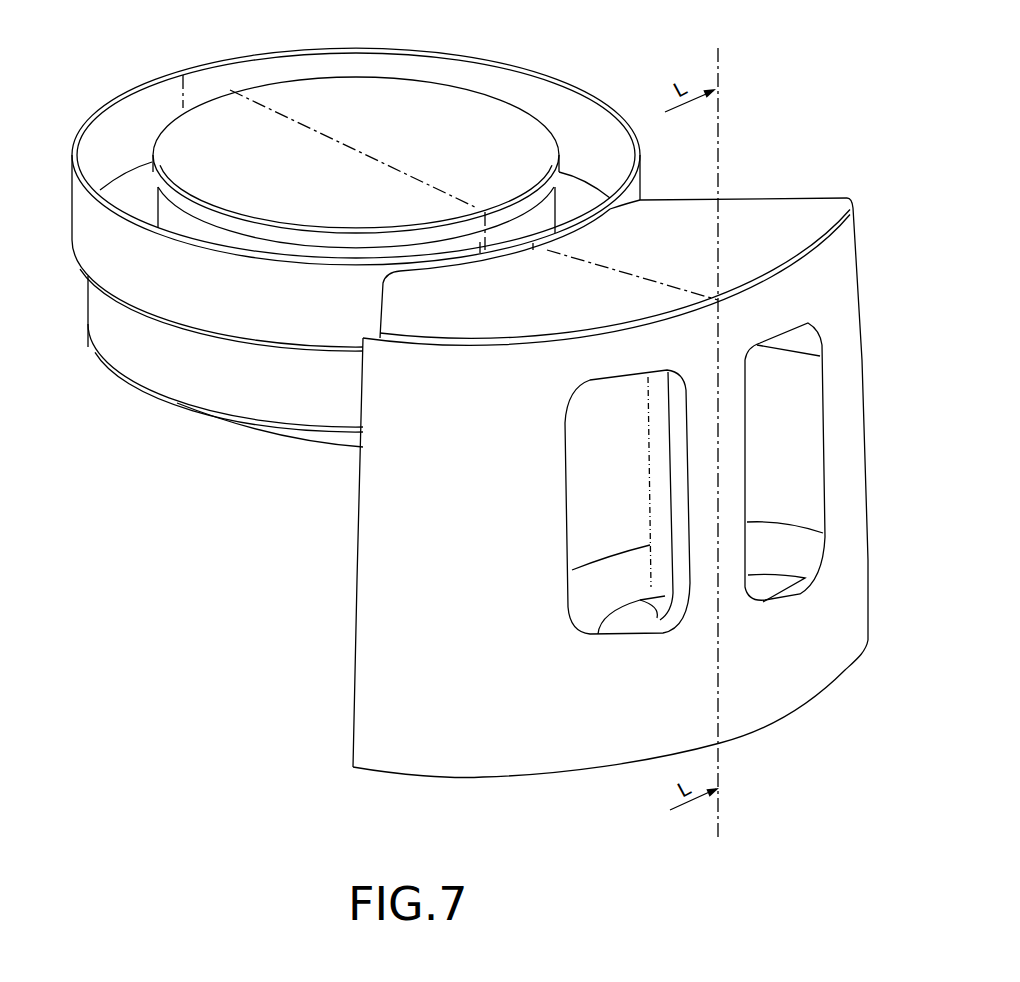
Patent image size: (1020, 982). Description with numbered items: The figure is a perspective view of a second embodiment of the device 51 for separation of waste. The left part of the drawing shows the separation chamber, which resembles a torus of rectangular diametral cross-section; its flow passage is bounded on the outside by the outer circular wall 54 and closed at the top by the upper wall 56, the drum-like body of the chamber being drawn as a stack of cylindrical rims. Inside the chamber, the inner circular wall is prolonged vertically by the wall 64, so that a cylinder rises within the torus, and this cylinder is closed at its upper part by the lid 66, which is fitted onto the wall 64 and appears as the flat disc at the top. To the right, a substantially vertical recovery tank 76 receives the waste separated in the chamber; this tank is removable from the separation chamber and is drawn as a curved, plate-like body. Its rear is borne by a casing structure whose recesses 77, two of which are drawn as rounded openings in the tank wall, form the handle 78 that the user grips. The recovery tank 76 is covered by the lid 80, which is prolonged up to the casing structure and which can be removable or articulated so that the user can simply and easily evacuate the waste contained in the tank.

The device for separation of waste 51 is at (195, 386).
The outer circular wall 54 is at (133, 348).
The upper wall 56 is at (128, 187).
The wall 64 is at (547, 225).
The lid 66 is at (470, 149).
The recovery tank 76 is at (314, 617).
The recesses 77 is at (628, 510).
The handle 78 is at (738, 548).
The lid 80 is at (762, 217).